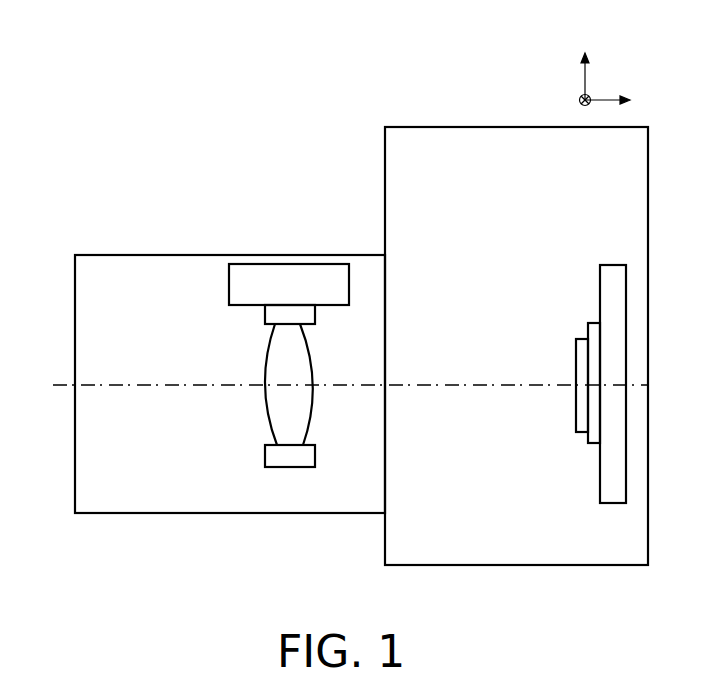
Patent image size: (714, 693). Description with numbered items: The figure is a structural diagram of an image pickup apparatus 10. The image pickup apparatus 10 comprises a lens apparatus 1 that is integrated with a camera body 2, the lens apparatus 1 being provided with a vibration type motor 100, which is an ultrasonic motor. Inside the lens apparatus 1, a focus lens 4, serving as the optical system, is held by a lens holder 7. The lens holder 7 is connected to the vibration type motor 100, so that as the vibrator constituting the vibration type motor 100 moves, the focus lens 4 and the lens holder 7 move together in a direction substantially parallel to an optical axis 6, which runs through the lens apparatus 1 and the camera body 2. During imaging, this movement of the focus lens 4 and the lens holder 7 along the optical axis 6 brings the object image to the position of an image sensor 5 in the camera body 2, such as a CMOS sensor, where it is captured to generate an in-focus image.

The image pickup apparatus 10 is at (692, 48).
The lens apparatus 1 is at (114, 255).
The camera body 2 is at (410, 127).
The focus lens 4 is at (281, 403).
The image sensor 5 is at (582, 340).
The optical axis 6 is at (53, 385).
The lens holder 7 is at (280, 311).
The vibration type motor 100 is at (280, 280).